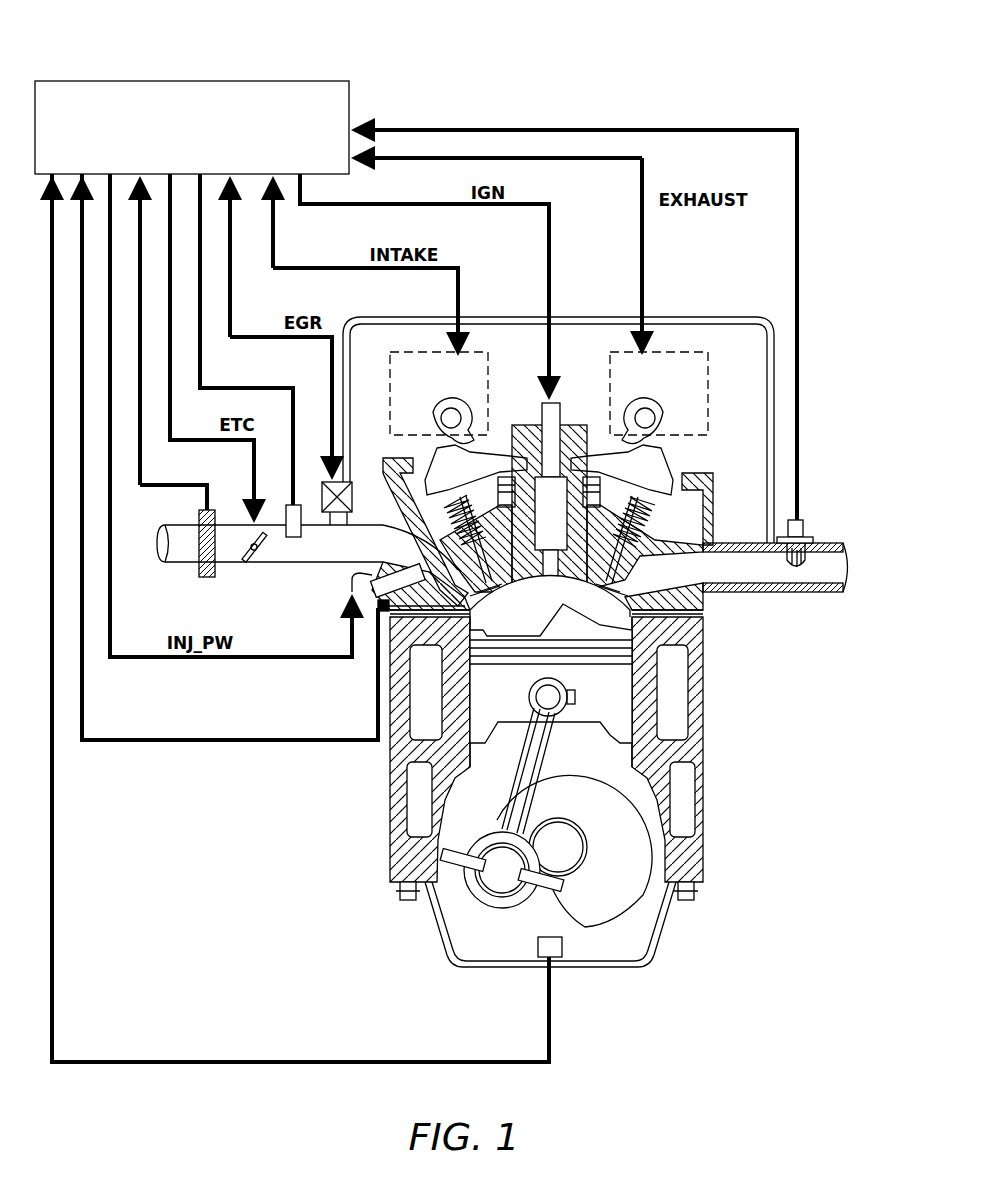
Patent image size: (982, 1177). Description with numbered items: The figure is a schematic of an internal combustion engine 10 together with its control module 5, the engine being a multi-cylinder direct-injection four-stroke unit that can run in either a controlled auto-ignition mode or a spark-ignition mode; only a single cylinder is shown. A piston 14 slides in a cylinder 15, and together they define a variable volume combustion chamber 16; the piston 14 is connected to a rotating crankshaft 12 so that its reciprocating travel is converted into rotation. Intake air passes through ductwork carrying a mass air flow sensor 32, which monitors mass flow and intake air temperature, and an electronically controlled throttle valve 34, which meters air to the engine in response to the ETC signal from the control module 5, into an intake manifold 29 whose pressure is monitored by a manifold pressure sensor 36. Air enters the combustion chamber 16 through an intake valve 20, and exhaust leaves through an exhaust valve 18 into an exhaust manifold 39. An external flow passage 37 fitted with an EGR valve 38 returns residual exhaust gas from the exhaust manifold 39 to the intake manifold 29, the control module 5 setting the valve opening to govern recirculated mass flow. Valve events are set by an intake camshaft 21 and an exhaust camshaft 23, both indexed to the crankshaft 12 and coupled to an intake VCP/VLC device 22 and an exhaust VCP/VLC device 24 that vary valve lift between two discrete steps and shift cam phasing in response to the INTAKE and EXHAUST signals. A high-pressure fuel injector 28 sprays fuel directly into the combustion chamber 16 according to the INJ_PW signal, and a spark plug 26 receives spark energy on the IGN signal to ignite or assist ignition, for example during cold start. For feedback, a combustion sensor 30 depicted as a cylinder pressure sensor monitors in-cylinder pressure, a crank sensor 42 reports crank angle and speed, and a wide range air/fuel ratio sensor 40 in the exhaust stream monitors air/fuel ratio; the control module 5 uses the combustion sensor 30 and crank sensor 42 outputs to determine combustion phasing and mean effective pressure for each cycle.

The control module 5 is at (307, 81).
The internal combustion engine 10 is at (685, 750).
The crankshaft 12 is at (607, 900).
The piston 14 is at (610, 710).
The cylinder 15 is at (632, 632).
The combustion chamber 16 is at (500, 620).
The exhaust valve 18 is at (623, 577).
The intake valve 20 is at (460, 562).
The intake camshaft 21 is at (462, 417).
The intake variable cam phasing/variable lift control device 22 is at (450, 357).
The exhaust camshaft 23 is at (636, 417).
The exhaust variable cam phasing/variable lift control device 24 is at (708, 420).
The spark plug 26 is at (560, 405).
The fuel injector 28 is at (357, 573).
The intake manifold 29 is at (363, 530).
The combustion sensor 30 is at (377, 613).
The mass air flow sensor 32 is at (207, 577).
The throttle valve 34 is at (250, 560).
The manifold pressure sensor 36 is at (293, 537).
The external flow passage 37 is at (690, 317).
The exhaust gas recirculation valve 38 is at (330, 513).
The exhaust manifold 39 is at (747, 543).
The wide range air/fuel ratio sensor 40 is at (803, 530).
The crank sensor 42 is at (543, 950).